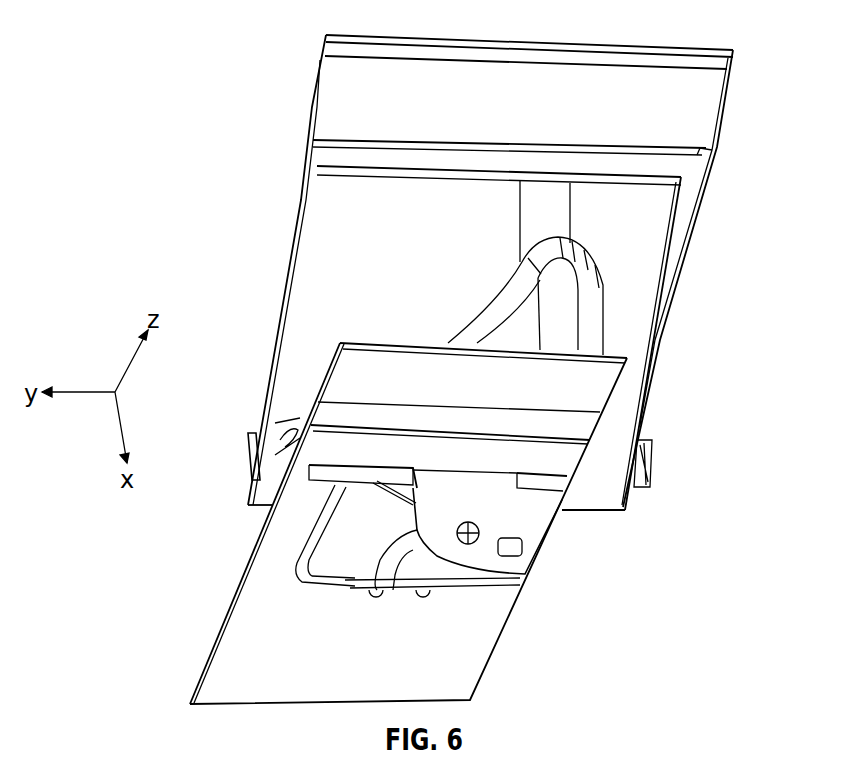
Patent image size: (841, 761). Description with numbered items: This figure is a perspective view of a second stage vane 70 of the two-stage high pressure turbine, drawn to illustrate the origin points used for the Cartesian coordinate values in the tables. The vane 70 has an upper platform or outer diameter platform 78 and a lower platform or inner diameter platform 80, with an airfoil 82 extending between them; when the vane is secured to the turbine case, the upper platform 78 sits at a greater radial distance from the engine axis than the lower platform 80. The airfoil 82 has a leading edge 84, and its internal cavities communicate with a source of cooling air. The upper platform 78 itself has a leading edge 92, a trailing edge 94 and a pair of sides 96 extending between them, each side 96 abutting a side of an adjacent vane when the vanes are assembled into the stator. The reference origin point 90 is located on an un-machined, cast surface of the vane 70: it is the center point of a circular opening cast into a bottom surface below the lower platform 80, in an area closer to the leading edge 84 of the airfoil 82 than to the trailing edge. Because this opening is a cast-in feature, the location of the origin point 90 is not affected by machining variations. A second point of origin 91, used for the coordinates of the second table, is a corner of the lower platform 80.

The vane 70 is at (758, 43).
The upper platform 78 is at (340, 222).
The lower platform 80 is at (250, 565).
The airfoil 82 is at (510, 328).
The leading edge 84 is at (568, 305).
The reference origin point 90 is at (470, 540).
The point of origin 91 is at (476, 700).
The leading edge of upper platform 92 is at (668, 147).
The trailing edge of upper platform 94 is at (650, 483).
The sides 96 is at (290, 343).